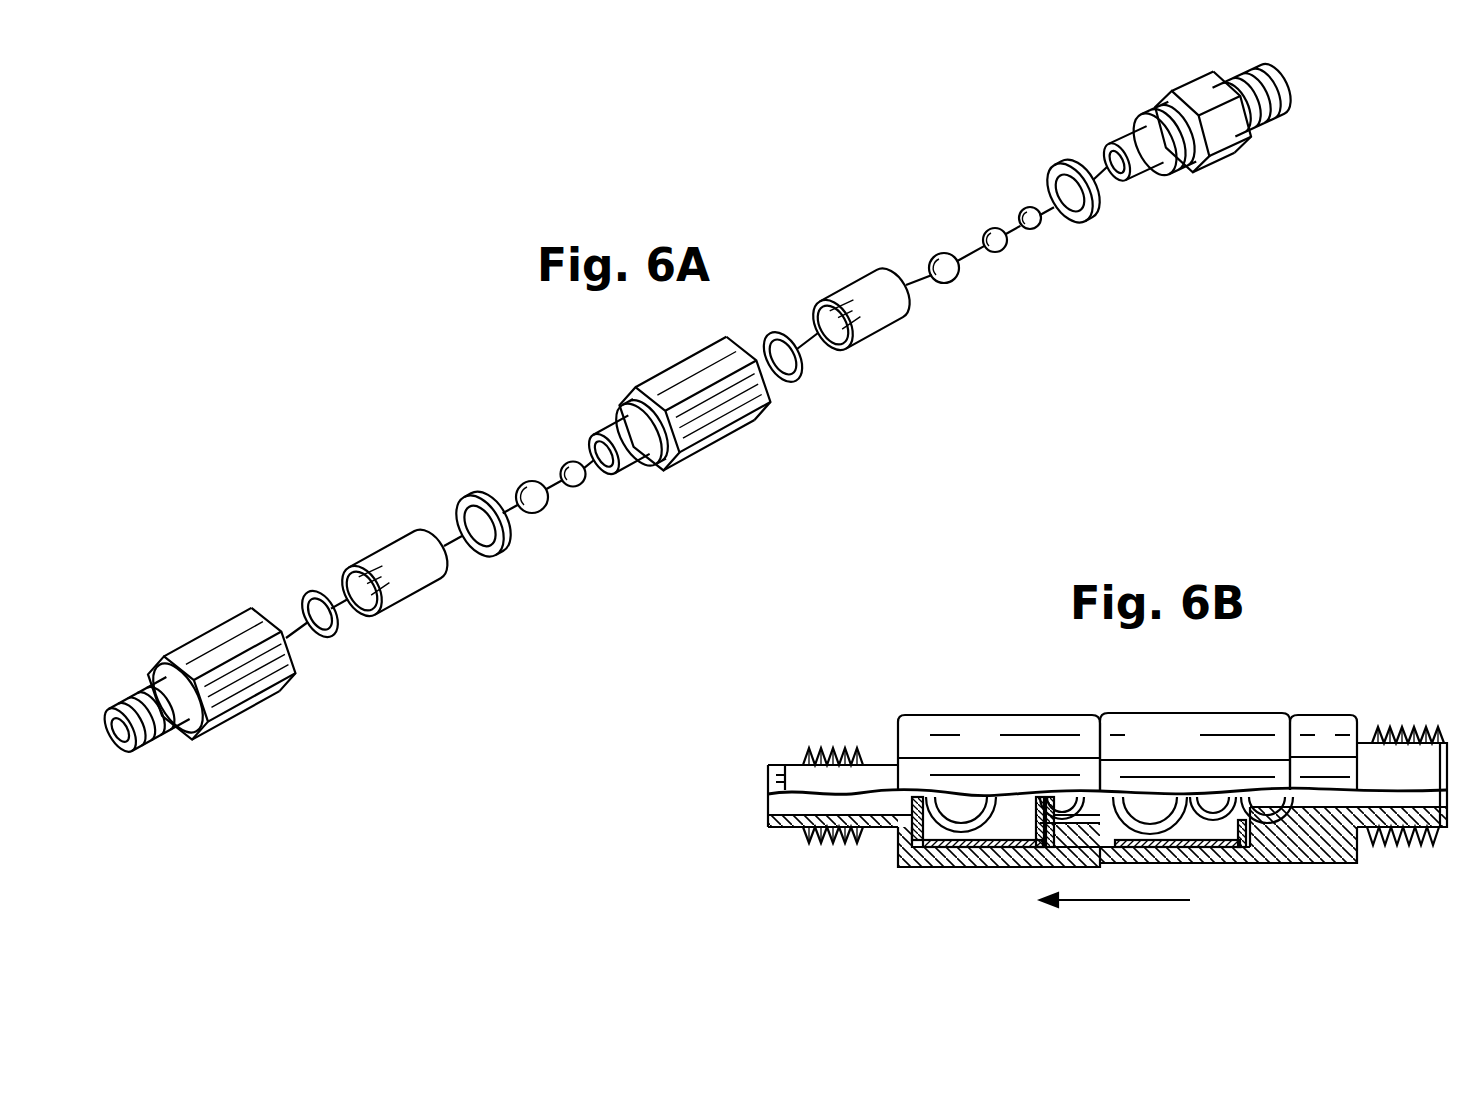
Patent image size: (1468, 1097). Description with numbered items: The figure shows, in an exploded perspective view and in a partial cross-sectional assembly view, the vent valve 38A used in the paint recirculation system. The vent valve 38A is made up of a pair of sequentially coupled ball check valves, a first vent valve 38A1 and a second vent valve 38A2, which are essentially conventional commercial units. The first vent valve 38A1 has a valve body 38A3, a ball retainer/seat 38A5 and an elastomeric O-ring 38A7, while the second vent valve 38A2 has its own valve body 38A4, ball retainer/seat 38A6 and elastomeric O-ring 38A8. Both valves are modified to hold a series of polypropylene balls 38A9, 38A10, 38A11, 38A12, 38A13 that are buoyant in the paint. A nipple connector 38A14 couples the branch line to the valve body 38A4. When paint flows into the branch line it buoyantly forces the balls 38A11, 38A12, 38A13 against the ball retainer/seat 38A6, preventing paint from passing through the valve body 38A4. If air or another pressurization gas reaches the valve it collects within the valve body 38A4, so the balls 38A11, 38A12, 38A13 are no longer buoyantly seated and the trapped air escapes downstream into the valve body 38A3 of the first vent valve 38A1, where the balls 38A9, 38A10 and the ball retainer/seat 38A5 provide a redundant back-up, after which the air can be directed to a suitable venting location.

In FIG. 6A, the vent valve 38A is at (465, 728).
In FIG. 6B, the vent valve 38A is at (850, 892).
In FIG. 6B, the first vent valve 38A1 is at (1008, 712).
In FIG. 6B, the second vent valve 38A2 is at (1190, 712).
In FIG. 6A, the valve body 38A3 is at (250, 685).
In FIG. 6B, the valve body 38A3 is at (990, 755).
In FIG. 6A, the valve body 38A4 is at (732, 420).
In FIG. 6B, the valve body 38A4 is at (1192, 757).
In FIG. 6A, the ball retainer/seat 38A5 is at (440, 573).
In FIG. 6B, the ball retainer/seat 38A5 is at (975, 868).
In FIG. 6A, the ball retainer/seat 38A6 is at (900, 310).
In FIG. 6B, the ball retainer/seat 38A6 is at (1205, 868).
In FIG. 6A, the elastomeric O-ring 38A7 is at (330, 641).
In FIG. 6B, the elastomeric O-ring 38A7 is at (900, 868).
In FIG. 6A, the elastomeric O-ring 38A8 is at (795, 385).
In FIG. 6B, the elastomeric O-ring 38A8 is at (1050, 852).
In FIG. 6A, the ball 38A9 is at (534, 514).
In FIG. 6B, the ball 38A9 is at (943, 800).
In FIG. 6A, the ball 38A10 is at (578, 487).
In FIG. 6B, the ball 38A10 is at (1063, 800).
In FIG. 6A, the ball 38A11 is at (948, 283).
In FIG. 6B, the ball 38A11 is at (1198, 835).
In FIG. 6A, the ball 38A12 is at (983, 231).
In FIG. 6B, the ball 38A12 is at (1240, 835).
In FIG. 6A, the ball 38A13 is at (1040, 230).
In FIG. 6B, the ball 38A13 is at (1300, 828).
In FIG. 6A, the nipple connector 38A14 is at (1218, 148).
In FIG. 6B, the nipple connector 38A14 is at (1347, 740).